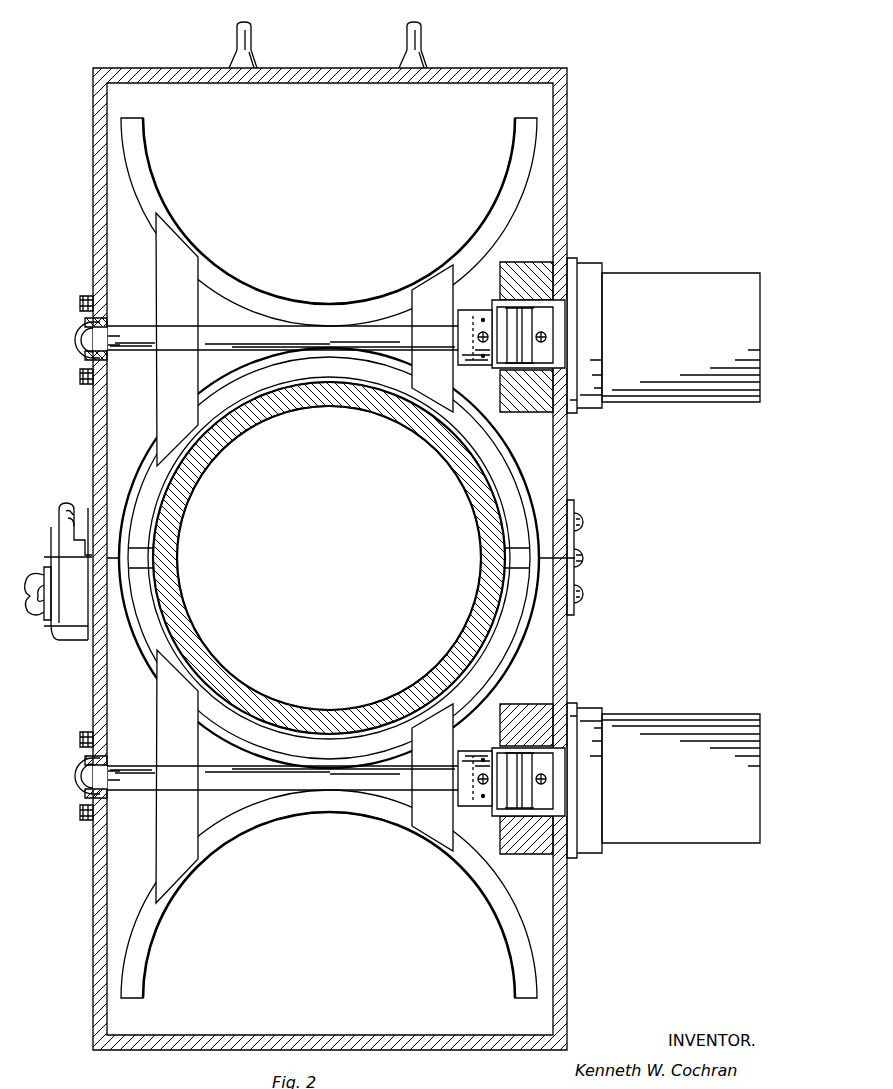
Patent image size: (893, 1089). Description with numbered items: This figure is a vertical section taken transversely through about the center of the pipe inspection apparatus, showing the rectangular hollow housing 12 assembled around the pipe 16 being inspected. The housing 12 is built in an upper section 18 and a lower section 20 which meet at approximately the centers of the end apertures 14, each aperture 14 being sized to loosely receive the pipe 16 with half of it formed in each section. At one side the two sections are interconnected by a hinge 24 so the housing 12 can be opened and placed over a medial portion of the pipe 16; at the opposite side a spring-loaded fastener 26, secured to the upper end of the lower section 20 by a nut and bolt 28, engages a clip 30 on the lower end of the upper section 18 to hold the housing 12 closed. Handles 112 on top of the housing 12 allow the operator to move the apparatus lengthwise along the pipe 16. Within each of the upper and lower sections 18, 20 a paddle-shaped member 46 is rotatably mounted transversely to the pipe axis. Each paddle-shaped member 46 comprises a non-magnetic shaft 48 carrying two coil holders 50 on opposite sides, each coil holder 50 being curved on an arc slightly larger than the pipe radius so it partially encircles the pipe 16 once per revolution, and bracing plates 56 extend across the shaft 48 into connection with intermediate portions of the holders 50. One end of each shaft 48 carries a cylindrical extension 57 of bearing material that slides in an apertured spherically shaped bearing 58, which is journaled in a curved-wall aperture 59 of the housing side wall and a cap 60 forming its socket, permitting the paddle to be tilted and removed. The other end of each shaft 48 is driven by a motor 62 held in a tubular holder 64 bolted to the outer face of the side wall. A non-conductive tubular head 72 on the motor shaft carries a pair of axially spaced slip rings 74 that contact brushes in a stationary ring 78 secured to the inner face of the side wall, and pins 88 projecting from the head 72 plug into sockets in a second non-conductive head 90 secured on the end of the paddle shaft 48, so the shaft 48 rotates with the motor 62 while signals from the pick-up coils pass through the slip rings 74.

The housing 12 is at (100, 398).
The aperture 14 is at (122, 472).
The pipe 16 is at (388, 412).
The upper section 18 is at (96, 205).
The lower section 20 is at (98, 920).
The hinge 24 is at (584, 558).
The spring-loaded fastener 26 is at (56, 522).
The nut and bolt 28 is at (42, 628).
The clip 30 is at (76, 514).
The paddle-shaped member 46 is at (249, 282).
The shaft 48 is at (147, 312).
The coil holder 50 is at (342, 300).
The bracing plate 56 is at (163, 258).
The cylindrical extension 57 is at (107, 352).
The spherically shaped bearing 58 is at (82, 310).
The curved-wall aperture 59 is at (112, 322).
The cap 60 is at (76, 345).
The motor 62 is at (682, 280).
The tubular holder 64 is at (590, 270).
The tubular head 72 is at (545, 320).
The slip rings 74 is at (527, 365).
The stationary ring 78 is at (536, 258).
The pins 88 is at (483, 322).
The head 90 is at (466, 356).
The handles 112 is at (405, 36).